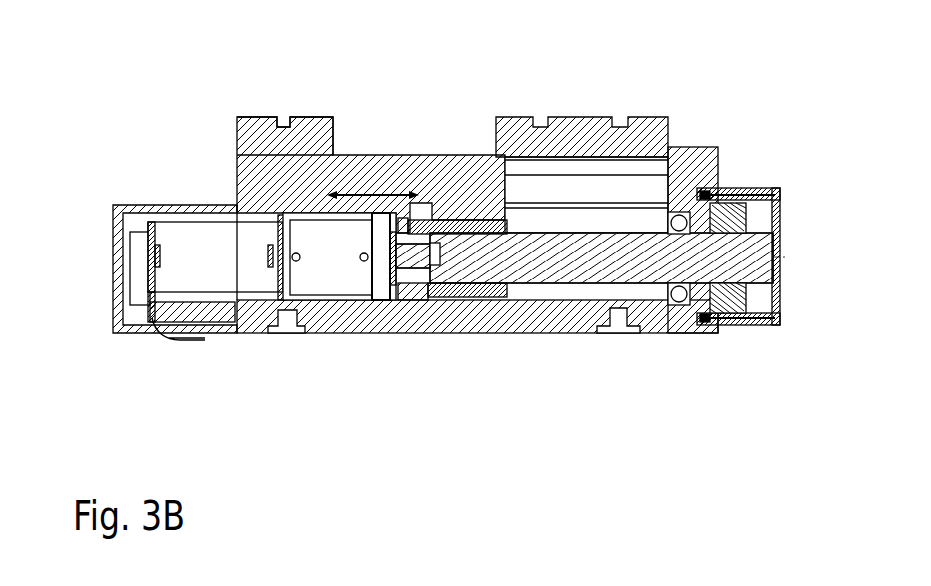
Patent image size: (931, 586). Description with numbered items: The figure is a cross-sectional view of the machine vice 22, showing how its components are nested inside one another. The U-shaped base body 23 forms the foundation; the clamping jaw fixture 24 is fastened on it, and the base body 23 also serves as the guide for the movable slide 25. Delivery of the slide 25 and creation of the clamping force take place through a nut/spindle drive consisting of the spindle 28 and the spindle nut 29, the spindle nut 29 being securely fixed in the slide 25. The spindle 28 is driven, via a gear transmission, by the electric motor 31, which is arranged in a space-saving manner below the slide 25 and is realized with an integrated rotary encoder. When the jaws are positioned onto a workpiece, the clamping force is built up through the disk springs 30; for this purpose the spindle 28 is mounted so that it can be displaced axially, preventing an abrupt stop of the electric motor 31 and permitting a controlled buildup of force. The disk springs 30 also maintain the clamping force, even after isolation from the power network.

The machine vice 22 is at (185, 100).
The U-shaped base body 23 is at (340, 320).
The clamping jaw fixture 24 is at (580, 130).
The slide 25 is at (262, 130).
The spindle 28 is at (563, 263).
The spindle nut 29 is at (468, 285).
The disk springs 30 is at (740, 300).
The electric motor 31 is at (200, 240).